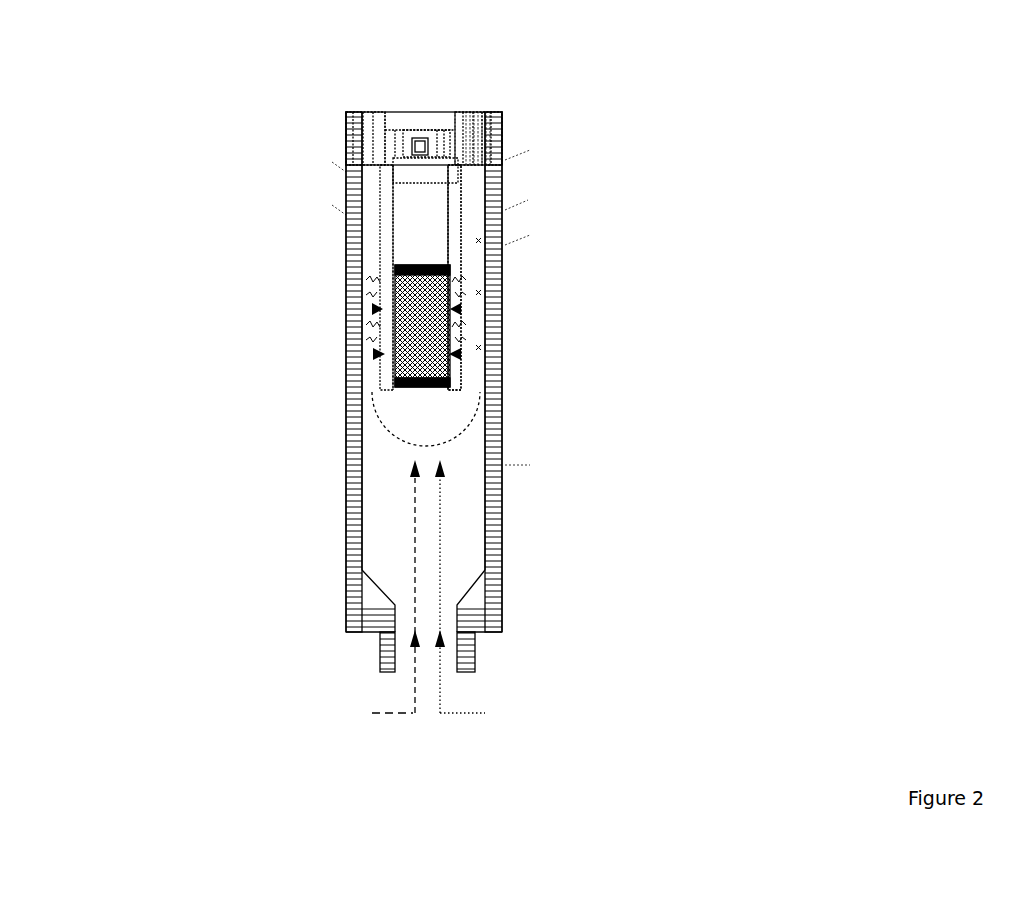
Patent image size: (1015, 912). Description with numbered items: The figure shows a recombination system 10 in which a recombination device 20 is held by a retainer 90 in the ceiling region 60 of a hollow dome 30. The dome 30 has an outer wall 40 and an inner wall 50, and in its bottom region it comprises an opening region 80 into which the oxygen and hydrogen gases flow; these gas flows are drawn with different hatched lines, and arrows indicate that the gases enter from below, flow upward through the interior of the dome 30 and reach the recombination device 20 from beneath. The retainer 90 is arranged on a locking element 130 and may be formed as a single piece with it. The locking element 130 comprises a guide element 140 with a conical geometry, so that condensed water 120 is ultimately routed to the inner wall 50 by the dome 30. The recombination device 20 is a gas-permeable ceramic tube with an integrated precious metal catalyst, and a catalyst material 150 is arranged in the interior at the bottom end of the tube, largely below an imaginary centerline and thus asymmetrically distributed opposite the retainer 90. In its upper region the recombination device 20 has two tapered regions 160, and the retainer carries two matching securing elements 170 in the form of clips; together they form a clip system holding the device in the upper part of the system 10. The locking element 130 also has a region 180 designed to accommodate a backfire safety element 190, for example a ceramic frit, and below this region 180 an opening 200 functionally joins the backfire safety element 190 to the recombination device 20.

The recombination system 10 is at (172, 180).
The ceiling region 60 is at (367, 97).
The backfire safety element 190 is at (440, 115).
The region 180 is at (415, 120).
The opening 200 is at (496, 118).
The locking element 130 is at (477, 147).
The retainer 90 is at (460, 163).
The tapered regions 160 is at (397, 185).
The guide element 140 is at (363, 170).
The securing elements 170 is at (437, 183).
The outer wall 40 is at (347, 372).
The condensed water 120 is at (497, 358).
The catalyst material 150 is at (397, 366).
The dome 30 is at (502, 237).
The recombination device 20 is at (458, 378).
The inner wall 50 is at (487, 497).
The opening region 80 is at (413, 620).